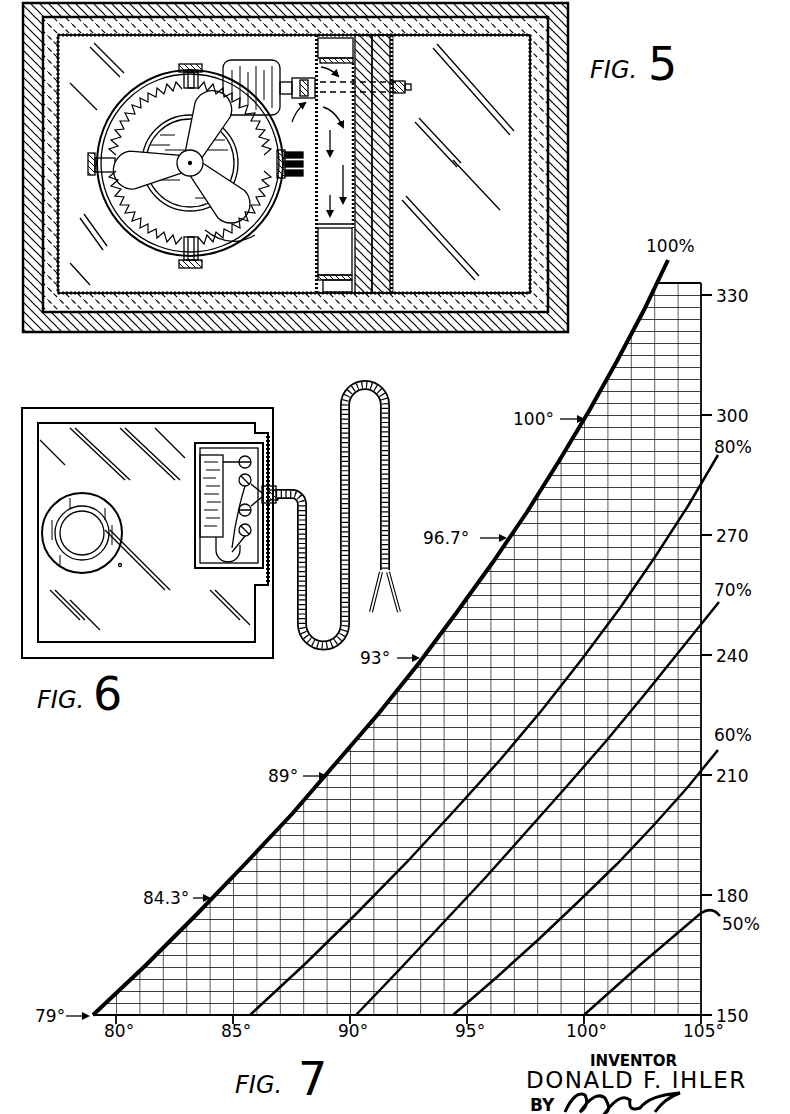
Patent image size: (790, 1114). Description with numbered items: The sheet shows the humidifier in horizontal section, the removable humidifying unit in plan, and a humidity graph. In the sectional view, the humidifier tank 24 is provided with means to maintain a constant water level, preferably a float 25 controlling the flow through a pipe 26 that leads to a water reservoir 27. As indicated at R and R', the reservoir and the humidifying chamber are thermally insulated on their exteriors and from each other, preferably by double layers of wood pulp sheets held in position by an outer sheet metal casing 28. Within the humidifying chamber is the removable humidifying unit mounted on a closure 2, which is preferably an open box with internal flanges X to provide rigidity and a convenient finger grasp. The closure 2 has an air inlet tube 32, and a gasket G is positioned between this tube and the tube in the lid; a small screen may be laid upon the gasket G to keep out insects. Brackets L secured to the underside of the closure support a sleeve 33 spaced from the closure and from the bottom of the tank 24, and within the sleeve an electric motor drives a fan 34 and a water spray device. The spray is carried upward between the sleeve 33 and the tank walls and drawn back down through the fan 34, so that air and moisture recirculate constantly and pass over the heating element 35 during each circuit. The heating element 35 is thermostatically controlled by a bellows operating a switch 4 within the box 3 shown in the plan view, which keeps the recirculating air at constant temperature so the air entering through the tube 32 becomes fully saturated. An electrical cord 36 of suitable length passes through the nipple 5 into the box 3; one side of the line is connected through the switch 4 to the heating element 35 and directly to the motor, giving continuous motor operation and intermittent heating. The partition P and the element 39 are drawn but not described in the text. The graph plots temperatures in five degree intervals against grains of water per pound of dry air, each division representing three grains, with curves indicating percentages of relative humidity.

In FIG. 6, the closure 2 is at (108, 408).
In FIG. 6, the box 3 is at (193, 532).
In FIG. 6, the switch 4 is at (204, 508).
In FIG. 6, the nipple 5 is at (282, 486).
In FIG. 5, the tank 24 is at (183, 289).
In FIG. 5, the float 25 is at (224, 62).
In FIG. 5, the pipe 26 is at (411, 87).
In FIG. 5, the water reservoir 27 is at (528, 164).
In FIG. 5, the sheet metal casing 28 is at (570, 196).
In FIG. 6, the air inlet tube 32 is at (105, 550).
In FIG. 5, the sleeve 33 is at (110, 222).
In FIG. 5, the fan 34 is at (253, 213).
In FIG. 5, the heating element 35 is at (148, 110).
In FIG. 6, the electrical cord 36 is at (341, 527).
In FIG. 5, the air duct outlet 39 is at (337, 248).
In FIG. 6, the gasket G is at (86, 493).
In FIG. 5, the brackets L is at (207, 264).
In FIG. 5, the partition P is at (312, 64).
In FIG. 5, the thermal insulation R is at (298, 54).
In FIG. 5, the thermal insulation R' is at (413, 176).
In FIG. 6, the internal flanges X is at (257, 582).